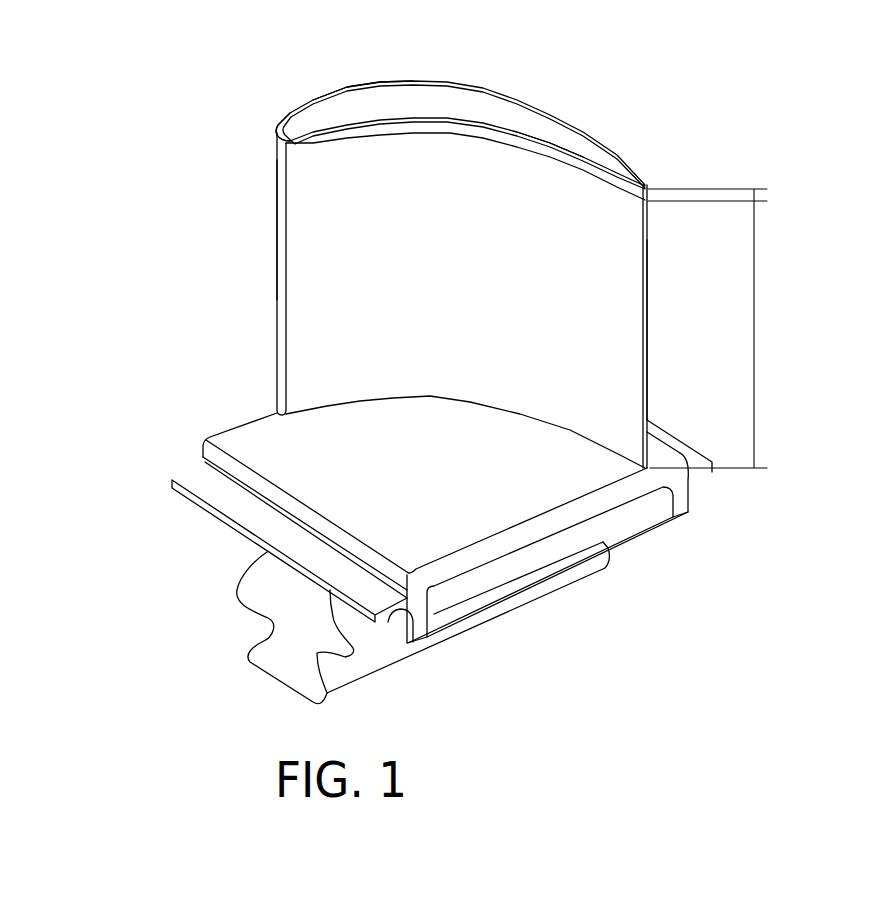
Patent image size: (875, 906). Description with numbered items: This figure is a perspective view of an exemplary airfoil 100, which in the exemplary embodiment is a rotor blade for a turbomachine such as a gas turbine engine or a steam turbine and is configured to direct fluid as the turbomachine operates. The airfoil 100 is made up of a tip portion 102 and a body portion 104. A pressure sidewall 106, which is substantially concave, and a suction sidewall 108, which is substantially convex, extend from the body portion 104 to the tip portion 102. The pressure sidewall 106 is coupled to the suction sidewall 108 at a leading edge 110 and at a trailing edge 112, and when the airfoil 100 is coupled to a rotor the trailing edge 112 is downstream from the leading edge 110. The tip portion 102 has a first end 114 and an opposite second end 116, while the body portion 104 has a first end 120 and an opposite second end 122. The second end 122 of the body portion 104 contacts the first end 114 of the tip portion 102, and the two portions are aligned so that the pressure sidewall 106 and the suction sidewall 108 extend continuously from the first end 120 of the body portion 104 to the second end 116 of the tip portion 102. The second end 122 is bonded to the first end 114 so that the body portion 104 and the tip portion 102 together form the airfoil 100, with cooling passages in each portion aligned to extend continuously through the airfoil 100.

The airfoil 100 is at (205, 257).
The tip portion 102 is at (757, 193).
The body portion 104 is at (755, 350).
The pressure sidewall 106 is at (600, 145).
The suction sidewall 108 is at (313, 304).
The leading edge 110 is at (277, 218).
The trailing edge 112 is at (648, 327).
The first end 114 is at (297, 147).
The second end 116 is at (333, 105).
The first end 120 is at (608, 462).
The second end 122 is at (565, 165).